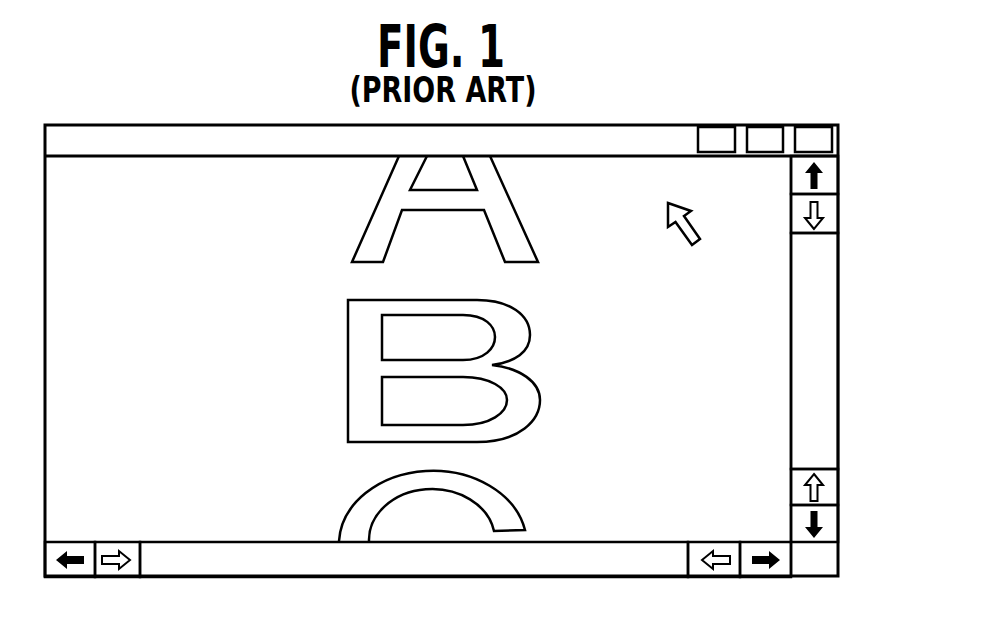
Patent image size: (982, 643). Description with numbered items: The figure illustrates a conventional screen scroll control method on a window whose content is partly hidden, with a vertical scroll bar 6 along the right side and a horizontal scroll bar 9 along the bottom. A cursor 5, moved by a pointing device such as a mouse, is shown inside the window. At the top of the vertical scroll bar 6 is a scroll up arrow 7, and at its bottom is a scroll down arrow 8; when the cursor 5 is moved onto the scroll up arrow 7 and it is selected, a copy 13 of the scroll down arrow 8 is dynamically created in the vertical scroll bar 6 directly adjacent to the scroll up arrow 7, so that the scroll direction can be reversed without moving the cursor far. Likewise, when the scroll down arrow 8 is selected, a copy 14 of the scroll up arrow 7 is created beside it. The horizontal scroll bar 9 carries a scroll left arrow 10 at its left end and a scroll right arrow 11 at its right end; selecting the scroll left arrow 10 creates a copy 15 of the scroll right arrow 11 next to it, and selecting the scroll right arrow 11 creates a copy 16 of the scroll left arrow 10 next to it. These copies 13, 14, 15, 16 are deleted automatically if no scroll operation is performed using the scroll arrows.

The cursor 5 is at (680, 231).
The vertical scroll bar 6 is at (840, 343).
The scroll up arrow 7 is at (840, 165).
The scroll down arrow 8 is at (840, 517).
The horizontal scroll bar 9 is at (374, 577).
The scroll left arrow 10 is at (67, 578).
The scroll right arrow 11 is at (765, 578).
The copy of the scroll down arrow 13 is at (840, 206).
The copy of the scroll up arrow 14 is at (840, 479).
The copy of the scroll right arrow 15 is at (112, 578).
The copy of the scroll left arrow 16 is at (720, 578).